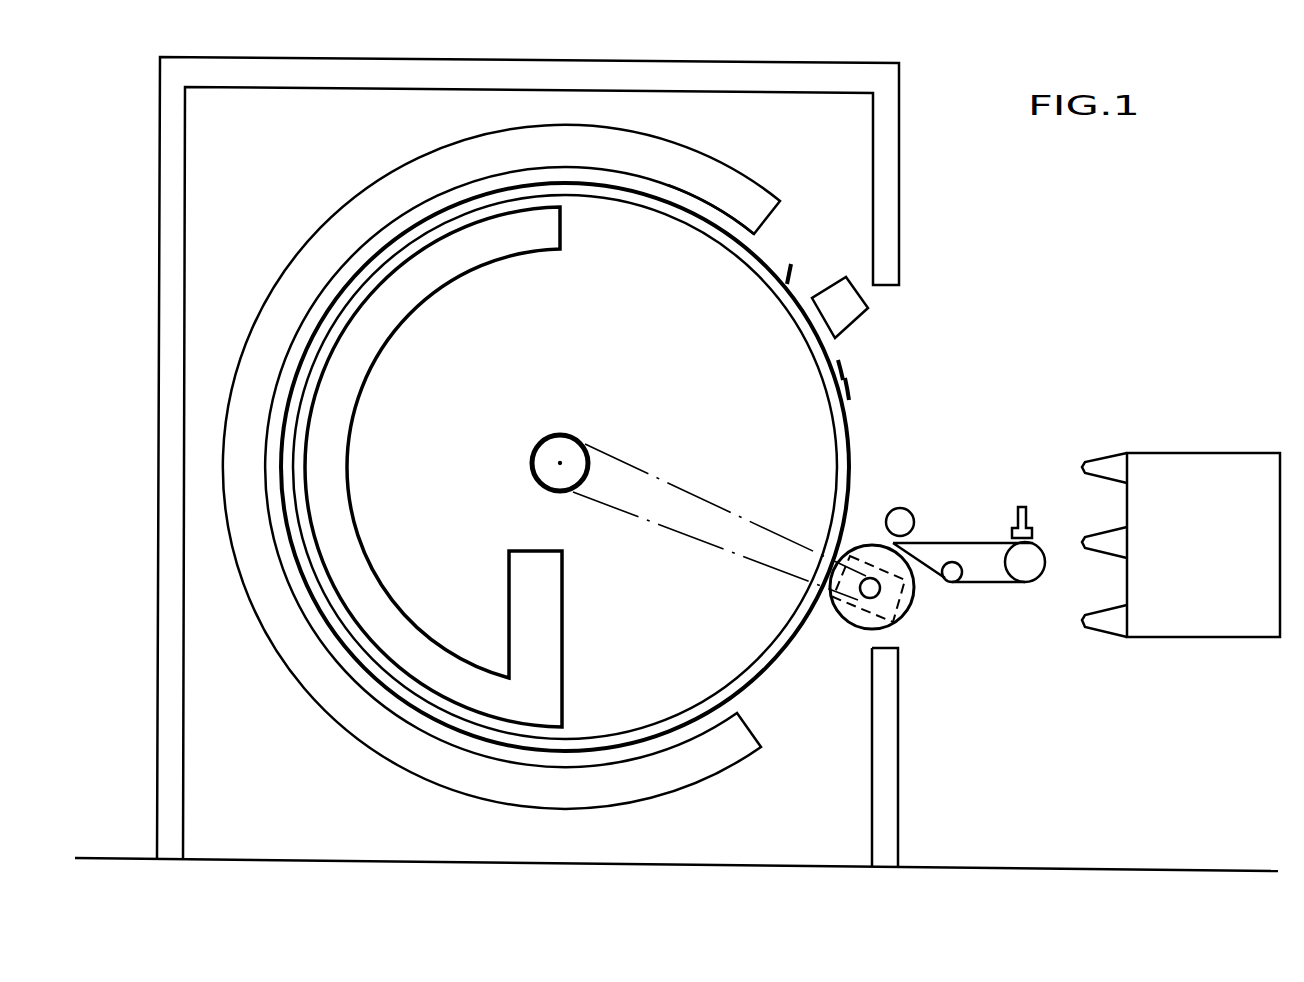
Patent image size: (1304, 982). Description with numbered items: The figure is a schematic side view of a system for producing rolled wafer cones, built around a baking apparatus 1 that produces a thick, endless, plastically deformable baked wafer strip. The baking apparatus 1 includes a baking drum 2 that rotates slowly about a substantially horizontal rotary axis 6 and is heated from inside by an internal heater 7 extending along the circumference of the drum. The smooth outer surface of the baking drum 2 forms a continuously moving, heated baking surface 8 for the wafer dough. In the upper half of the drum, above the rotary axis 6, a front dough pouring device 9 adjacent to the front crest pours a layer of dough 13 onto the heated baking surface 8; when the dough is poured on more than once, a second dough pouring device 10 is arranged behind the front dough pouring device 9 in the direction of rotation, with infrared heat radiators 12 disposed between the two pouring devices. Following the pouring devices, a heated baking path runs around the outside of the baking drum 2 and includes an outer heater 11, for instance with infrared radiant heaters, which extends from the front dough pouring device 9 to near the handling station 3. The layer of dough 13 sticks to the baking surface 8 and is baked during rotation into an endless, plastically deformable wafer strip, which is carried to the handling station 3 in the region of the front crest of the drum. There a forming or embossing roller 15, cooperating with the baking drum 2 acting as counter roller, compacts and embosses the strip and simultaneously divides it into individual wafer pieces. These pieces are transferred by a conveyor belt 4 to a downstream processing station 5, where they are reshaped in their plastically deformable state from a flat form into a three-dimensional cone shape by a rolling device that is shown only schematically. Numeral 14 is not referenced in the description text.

The baking apparatus 1 is at (160, 93).
The baking drum 2 is at (843, 471).
The handling station 3 is at (948, 483).
The conveyor belt 4 is at (951, 543).
The processing station 5 is at (1076, 428).
The rotary axis 6 is at (540, 457).
The internal heater 7 is at (545, 233).
The baking surface 8 is at (855, 424).
The front dough pouring device 9 is at (858, 384).
The second dough pouring device 10 is at (818, 268).
The outer heater 11 is at (392, 172).
The infrared heat radiators 12 is at (866, 306).
The layer of dough 13 is at (836, 369).
The inner shell wall 14 is at (758, 250).
The forming or embossing roller 15 is at (903, 620).